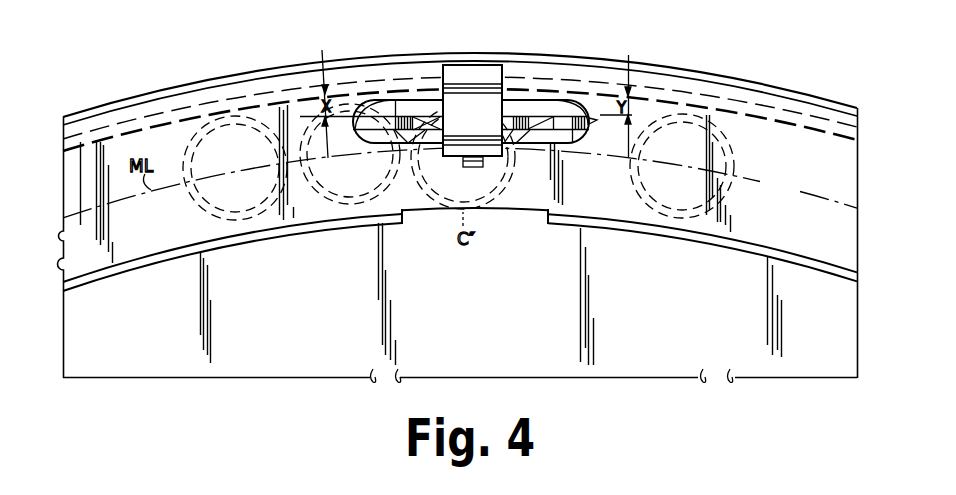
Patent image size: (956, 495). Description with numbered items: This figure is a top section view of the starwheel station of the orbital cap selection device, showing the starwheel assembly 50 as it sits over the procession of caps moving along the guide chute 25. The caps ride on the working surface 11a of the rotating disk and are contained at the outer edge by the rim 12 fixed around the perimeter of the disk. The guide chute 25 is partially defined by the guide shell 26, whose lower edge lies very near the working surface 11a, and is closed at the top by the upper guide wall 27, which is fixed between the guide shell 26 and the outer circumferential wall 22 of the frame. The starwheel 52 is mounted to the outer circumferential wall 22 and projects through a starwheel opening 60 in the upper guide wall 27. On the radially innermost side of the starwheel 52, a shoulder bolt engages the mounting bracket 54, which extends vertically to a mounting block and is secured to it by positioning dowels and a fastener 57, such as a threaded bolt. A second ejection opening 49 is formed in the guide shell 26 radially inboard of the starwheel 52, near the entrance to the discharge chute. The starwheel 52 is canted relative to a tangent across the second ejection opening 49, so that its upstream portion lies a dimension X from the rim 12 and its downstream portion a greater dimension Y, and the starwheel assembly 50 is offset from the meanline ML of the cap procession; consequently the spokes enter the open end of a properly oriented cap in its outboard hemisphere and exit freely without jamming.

The rim 12 is at (755, 110).
The outer circumferential wall 22 is at (697, 80).
The working surface 11a is at (560, 310).
The guide shell 26 is at (233, 245).
The guide chute 25 is at (166, 270).
The second ejection opening 49 is at (548, 215).
The upper guide wall 27 is at (791, 192).
The starwheel opening 60 is at (557, 106).
The starwheel 52 is at (567, 130).
The starwheel assembly 50 is at (513, 93).
The mounting bracket 54 is at (443, 157).
The fastener 57 is at (485, 163).